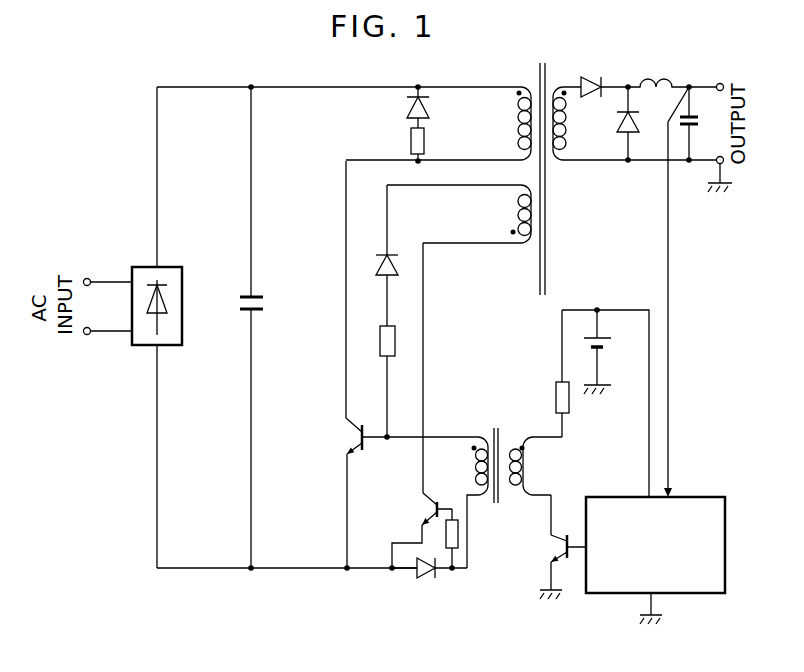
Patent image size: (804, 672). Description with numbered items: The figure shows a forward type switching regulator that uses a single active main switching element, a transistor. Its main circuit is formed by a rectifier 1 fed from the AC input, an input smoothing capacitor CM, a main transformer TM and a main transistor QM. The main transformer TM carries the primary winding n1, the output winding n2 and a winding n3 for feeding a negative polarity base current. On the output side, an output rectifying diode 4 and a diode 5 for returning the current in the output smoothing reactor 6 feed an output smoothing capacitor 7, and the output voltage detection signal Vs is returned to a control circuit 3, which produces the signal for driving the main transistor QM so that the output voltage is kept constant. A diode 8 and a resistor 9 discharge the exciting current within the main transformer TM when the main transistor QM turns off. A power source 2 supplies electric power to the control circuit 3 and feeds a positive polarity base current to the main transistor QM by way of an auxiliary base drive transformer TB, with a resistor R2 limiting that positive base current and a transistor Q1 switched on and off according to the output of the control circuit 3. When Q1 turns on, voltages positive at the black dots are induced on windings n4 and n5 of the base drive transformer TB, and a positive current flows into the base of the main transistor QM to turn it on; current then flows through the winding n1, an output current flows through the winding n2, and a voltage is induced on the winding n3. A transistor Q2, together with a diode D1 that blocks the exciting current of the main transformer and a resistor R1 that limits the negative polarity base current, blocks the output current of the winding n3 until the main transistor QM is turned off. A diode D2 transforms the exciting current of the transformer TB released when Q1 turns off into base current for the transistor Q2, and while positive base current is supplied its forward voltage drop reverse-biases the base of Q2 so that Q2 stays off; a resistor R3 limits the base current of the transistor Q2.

The rectifier 1 is at (148, 267).
The power source 2 is at (605, 346).
The control circuit 3 is at (725, 548).
The output rectifying diode 4 is at (590, 77).
The diode 5 is at (616, 117).
The choke coil 6 is at (657, 80).
The output smoothing capacitor 7 is at (700, 122).
The diode 8 is at (405, 108).
The resistor 9 is at (408, 142).
The input smoothing capacitor CM is at (240, 302).
The main transformer TM is at (543, 63).
The primary winding n1 is at (515, 122).
The output winding n2 is at (571, 125).
The winding n3 is at (515, 215).
The winding n4 is at (534, 457).
The winding n5 is at (470, 458).
The base drive transformer TB is at (496, 428).
The diode D1 is at (380, 262).
The resistor R1 is at (380, 338).
The resistor R2 is at (556, 398).
The resistor R3 is at (458, 533).
The diode D2 is at (432, 578).
The main transistor QM is at (350, 424).
The transistor Q1 is at (565, 547).
The transistor Q2 is at (430, 504).
The output voltage detection signal Vs is at (680, 293).